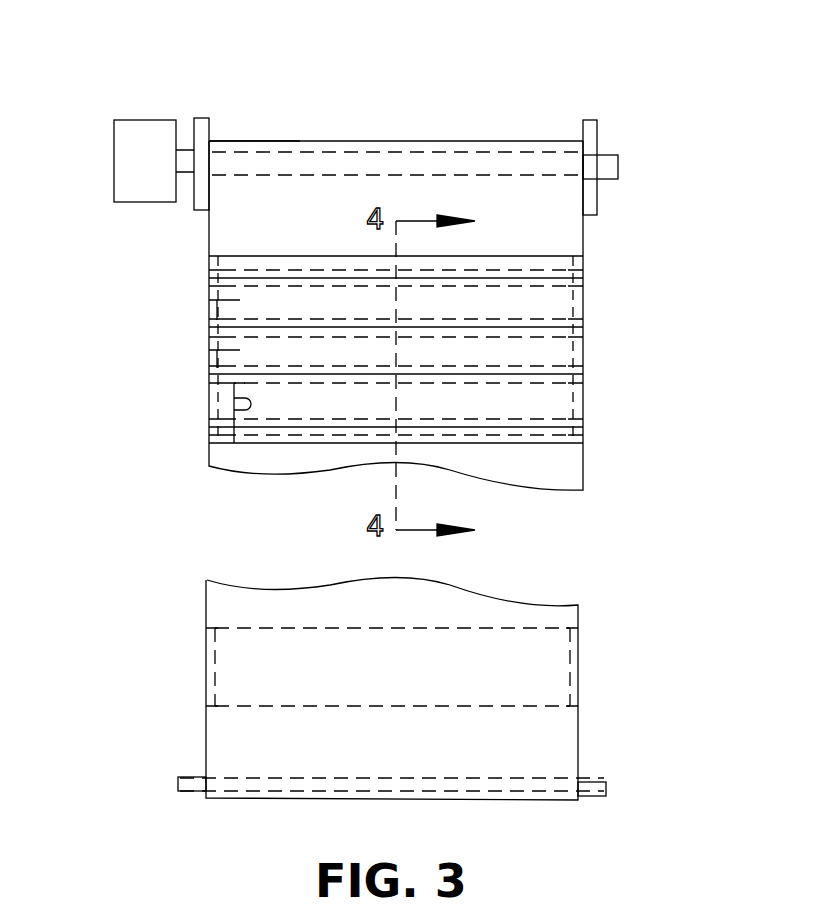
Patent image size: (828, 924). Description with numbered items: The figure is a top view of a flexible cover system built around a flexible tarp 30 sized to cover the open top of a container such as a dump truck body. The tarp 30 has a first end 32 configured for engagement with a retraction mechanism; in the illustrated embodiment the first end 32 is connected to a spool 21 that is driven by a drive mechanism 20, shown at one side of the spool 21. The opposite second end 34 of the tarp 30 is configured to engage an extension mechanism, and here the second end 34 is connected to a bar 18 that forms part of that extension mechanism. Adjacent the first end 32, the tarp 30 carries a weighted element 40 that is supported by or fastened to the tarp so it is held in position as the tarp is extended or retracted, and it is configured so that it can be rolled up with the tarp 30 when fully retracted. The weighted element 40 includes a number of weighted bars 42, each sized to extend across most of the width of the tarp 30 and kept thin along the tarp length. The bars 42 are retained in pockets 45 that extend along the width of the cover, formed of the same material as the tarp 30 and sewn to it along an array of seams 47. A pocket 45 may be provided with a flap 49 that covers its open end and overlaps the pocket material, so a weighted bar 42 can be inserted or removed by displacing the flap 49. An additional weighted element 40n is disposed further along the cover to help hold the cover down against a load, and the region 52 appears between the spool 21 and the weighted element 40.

The bar 18 is at (185, 780).
The drive mechanism 20 is at (150, 120).
The spool 21 is at (608, 158).
The flexible tarp 30 is at (255, 455).
The first end 32 is at (258, 162).
The second end 34 is at (258, 790).
The weighted element 40 is at (431, 374).
The additional weighted element 40n is at (505, 679).
The weighted bars 42 is at (208, 350).
The pockets 45 is at (528, 263).
The seams 47 is at (583, 311).
The flap 49 is at (250, 411).
The housing top surface 52 is at (254, 185).